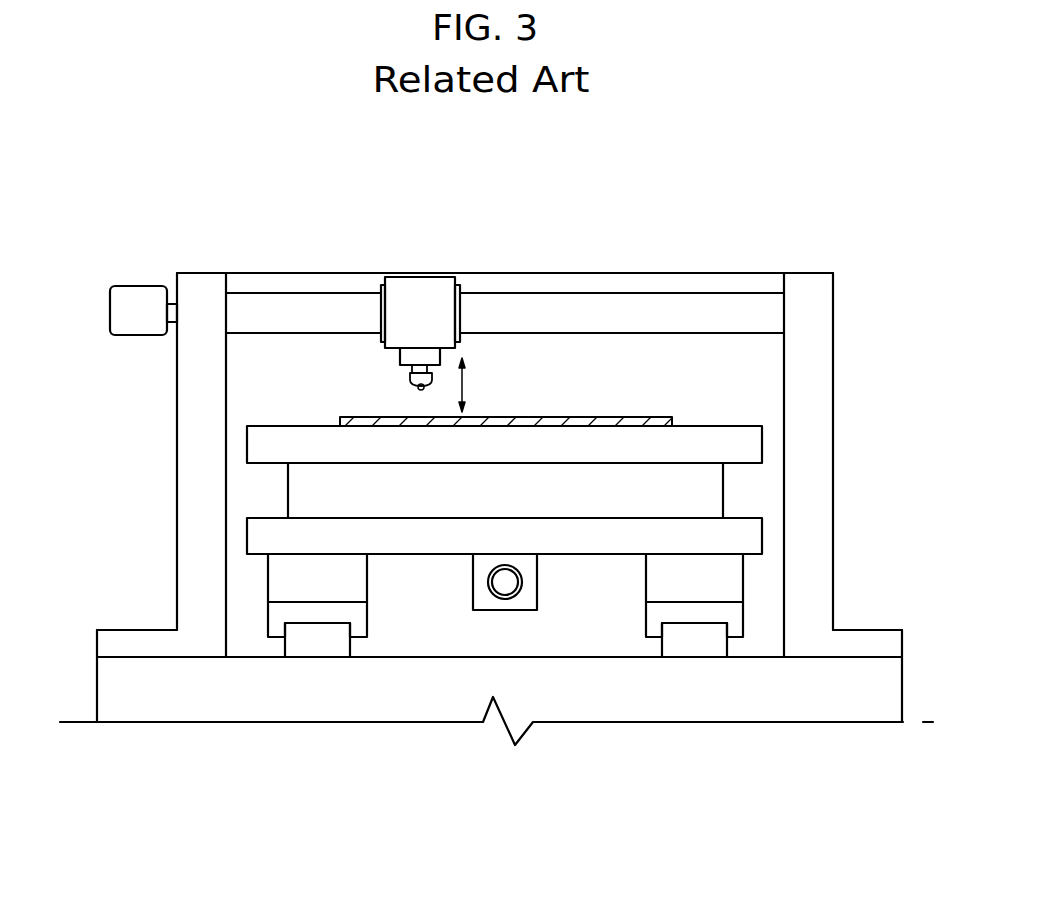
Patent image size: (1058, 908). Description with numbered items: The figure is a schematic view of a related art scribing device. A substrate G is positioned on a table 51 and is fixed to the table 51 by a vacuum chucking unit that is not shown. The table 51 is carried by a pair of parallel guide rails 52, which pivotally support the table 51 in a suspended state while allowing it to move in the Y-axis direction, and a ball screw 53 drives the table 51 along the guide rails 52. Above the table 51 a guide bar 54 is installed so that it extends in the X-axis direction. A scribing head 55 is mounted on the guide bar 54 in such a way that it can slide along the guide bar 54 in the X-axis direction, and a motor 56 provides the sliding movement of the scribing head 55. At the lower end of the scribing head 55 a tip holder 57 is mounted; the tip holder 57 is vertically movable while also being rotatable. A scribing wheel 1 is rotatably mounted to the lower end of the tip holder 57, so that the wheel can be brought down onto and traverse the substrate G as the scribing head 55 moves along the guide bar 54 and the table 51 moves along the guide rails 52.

The scribing wheel 1 is at (418, 388).
The table 51 is at (722, 446).
The guide rails 52 is at (318, 645).
The ball screw 53 is at (507, 586).
The guide bar 54 is at (693, 304).
The scribing head 55 is at (421, 301).
The motor 56 is at (137, 298).
The tip holder 57 is at (410, 377).
The substrate G is at (562, 420).